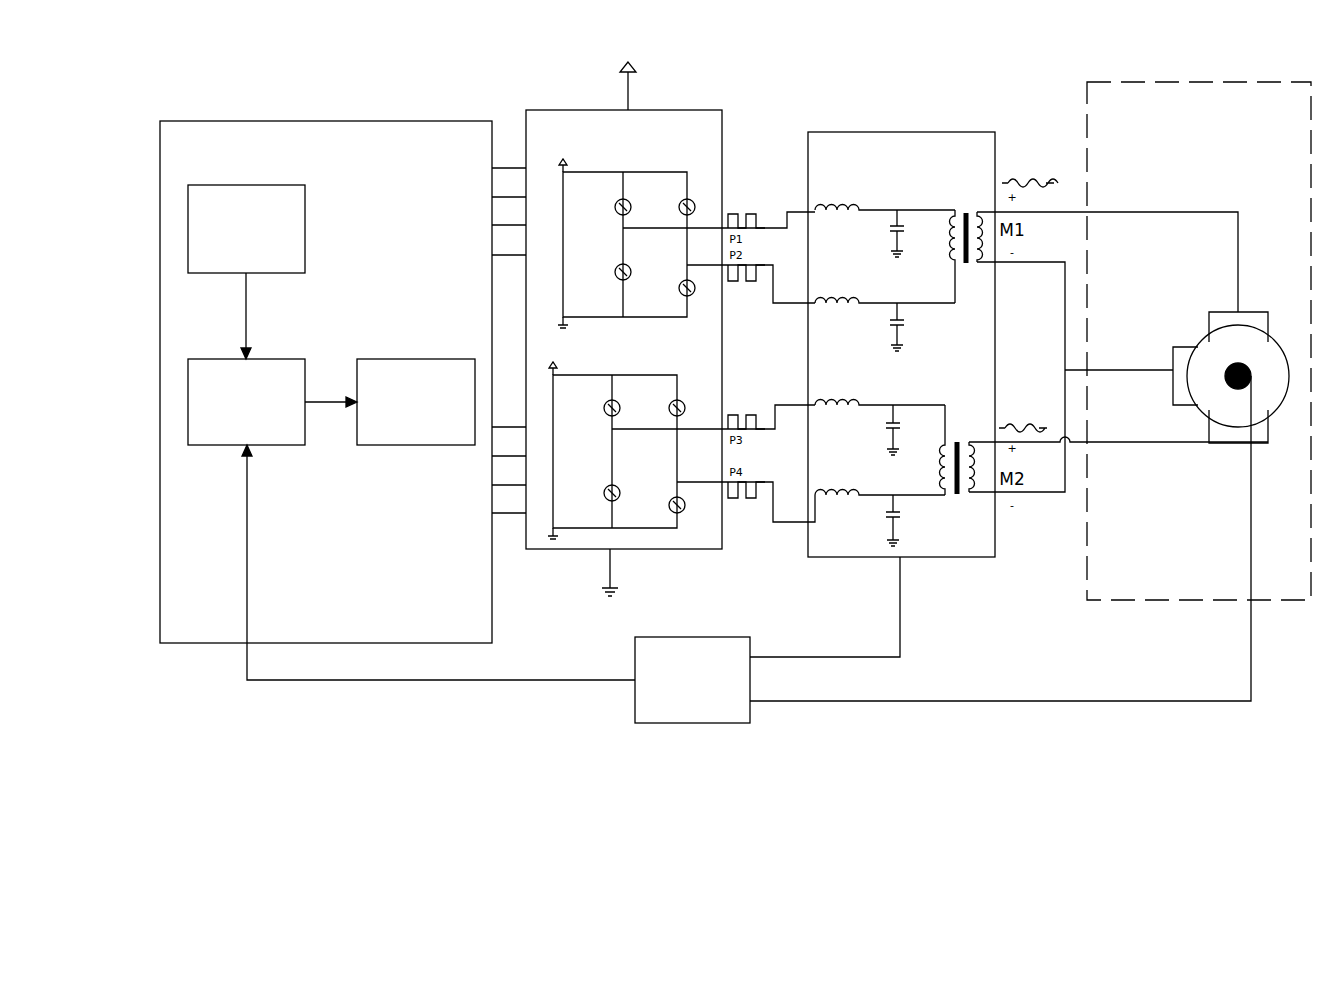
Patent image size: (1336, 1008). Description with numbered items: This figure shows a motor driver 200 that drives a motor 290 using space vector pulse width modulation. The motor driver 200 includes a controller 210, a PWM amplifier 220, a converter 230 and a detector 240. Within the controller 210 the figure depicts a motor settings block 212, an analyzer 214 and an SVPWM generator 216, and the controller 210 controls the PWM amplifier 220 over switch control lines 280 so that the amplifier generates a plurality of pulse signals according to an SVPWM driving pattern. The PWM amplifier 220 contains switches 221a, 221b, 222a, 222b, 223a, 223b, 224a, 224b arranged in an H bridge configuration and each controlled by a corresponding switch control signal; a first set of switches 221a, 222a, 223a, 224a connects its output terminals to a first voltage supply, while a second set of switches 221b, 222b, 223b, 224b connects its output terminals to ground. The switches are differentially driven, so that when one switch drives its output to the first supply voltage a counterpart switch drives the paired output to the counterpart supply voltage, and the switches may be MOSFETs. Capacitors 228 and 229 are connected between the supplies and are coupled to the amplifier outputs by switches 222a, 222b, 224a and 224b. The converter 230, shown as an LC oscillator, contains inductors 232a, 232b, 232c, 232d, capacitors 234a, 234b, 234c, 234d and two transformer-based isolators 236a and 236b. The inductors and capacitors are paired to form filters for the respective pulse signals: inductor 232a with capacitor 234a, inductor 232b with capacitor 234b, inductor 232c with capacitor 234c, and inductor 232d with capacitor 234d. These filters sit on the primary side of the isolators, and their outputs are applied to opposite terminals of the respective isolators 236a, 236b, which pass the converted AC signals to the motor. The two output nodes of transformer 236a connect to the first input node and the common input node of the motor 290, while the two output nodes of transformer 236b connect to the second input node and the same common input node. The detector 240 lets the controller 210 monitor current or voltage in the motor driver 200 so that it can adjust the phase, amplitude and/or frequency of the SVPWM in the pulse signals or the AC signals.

The motor driver 200 is at (940, 816).
The controller 210 is at (326, 382).
The motor settings 212 is at (246, 229).
The analyzer 214 is at (246, 402).
The SVPWM generator 216 is at (416, 402).
The PWM amplifier 220 is at (624, 329).
The switch 221a is at (605, 204).
The switch 221b is at (581, 254).
The switch 222a is at (669, 204).
The switch 222b is at (645, 273).
The switch 223a is at (593, 405).
The switch 223b is at (568, 476).
The switch 224a is at (658, 405).
The switch 224b is at (636, 488).
The capacitor 228 is at (559, 175).
The capacitor 229 is at (549, 380).
The converter 230 is at (901, 344).
The inductor 232a is at (885, 196).
The inductor 232b is at (885, 291).
The inductor 232c is at (880, 392).
The inductor 232d is at (880, 486).
The capacitor 234a is at (881, 233).
The capacitor 234b is at (881, 327).
The capacitor 234c is at (878, 430).
The capacitor 234d is at (878, 520).
The isolator 236a is at (950, 256).
The isolator 236b is at (944, 450).
The detector 240 is at (767, 640).
The switch control lines 280 is at (498, 168).
The motor 290 is at (1188, 341).